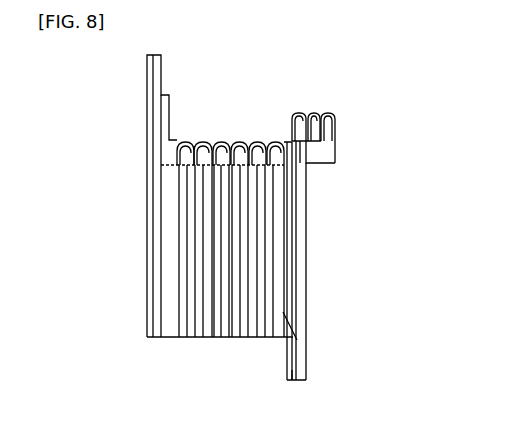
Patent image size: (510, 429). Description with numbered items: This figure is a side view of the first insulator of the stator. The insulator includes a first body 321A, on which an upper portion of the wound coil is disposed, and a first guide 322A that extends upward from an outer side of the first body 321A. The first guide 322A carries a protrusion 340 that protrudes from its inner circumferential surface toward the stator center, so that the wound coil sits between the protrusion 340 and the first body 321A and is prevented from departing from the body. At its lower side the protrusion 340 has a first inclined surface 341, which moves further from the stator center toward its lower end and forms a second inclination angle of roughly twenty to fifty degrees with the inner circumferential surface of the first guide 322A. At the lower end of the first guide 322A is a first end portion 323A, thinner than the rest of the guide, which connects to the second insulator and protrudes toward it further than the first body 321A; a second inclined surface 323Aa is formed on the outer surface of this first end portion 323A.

The first body 321A is at (224, 150).
The protrusion 340 is at (288, 141).
The first guide 322A is at (325, 112).
The first inclined surface 341 is at (300, 323).
The first end portion 323A is at (300, 340).
The second inclined surface 323Aa is at (306, 362).